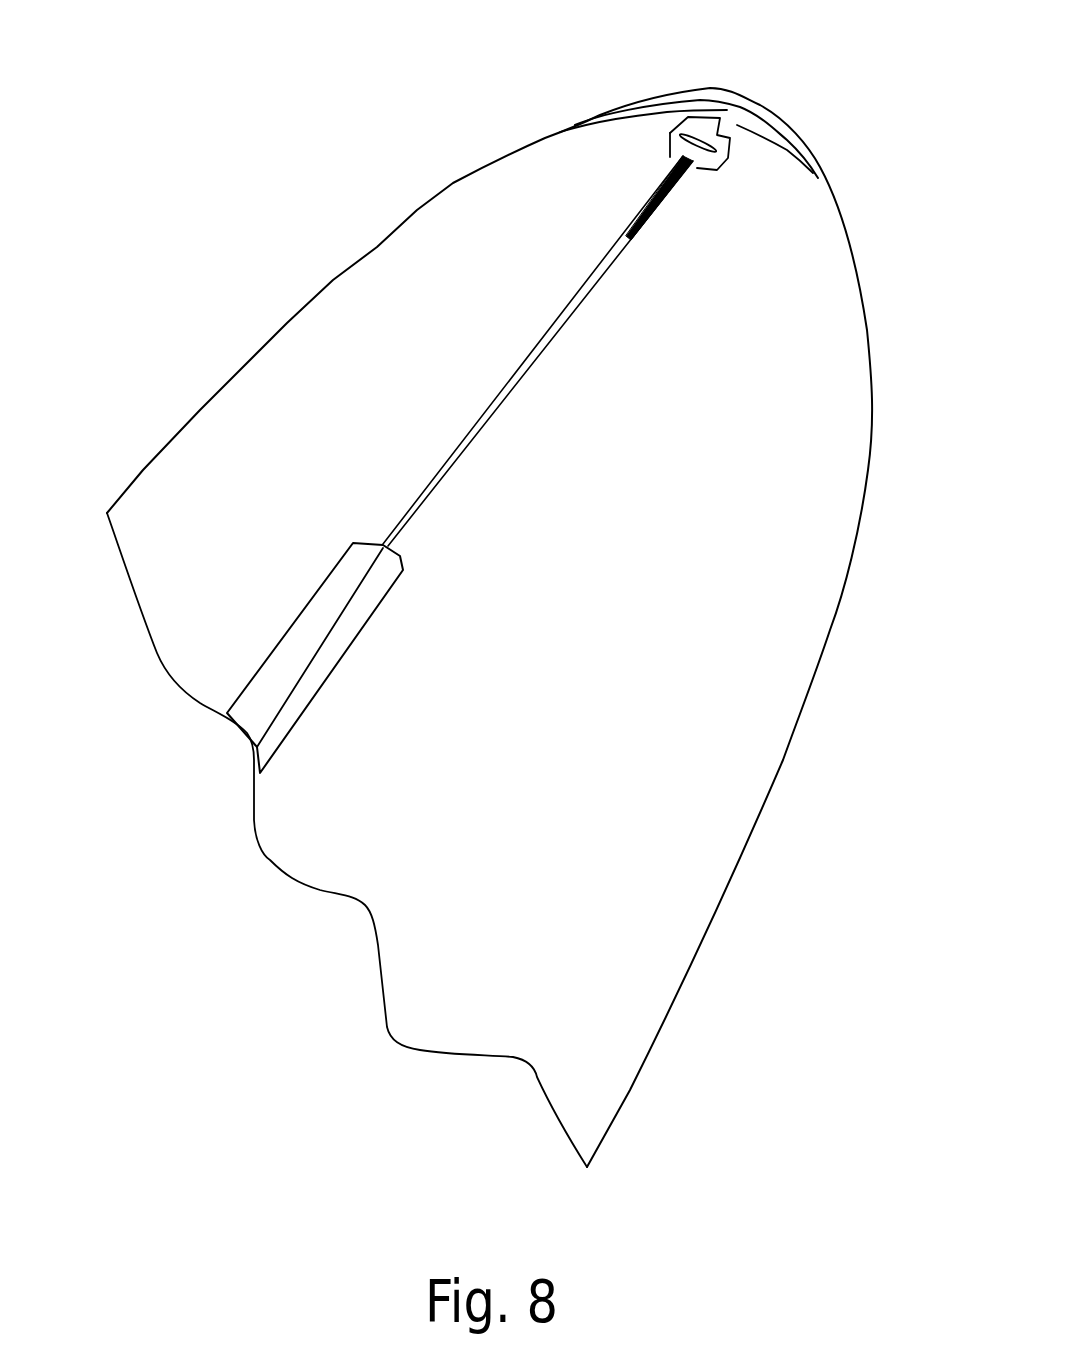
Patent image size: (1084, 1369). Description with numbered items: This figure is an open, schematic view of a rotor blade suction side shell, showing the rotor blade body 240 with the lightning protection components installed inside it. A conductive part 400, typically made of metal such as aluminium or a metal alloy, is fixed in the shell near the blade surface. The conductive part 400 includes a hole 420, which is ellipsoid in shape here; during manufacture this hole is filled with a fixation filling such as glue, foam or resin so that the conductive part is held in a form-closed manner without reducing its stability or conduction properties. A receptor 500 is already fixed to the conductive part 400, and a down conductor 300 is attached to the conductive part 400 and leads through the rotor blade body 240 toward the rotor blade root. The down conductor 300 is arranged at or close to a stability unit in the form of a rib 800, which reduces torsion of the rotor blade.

The rotor blade body 240 is at (651, 668).
The down conductor 300 is at (463, 453).
The conductive part 400 is at (705, 158).
The hole 420 is at (670, 133).
The receptor 500 is at (737, 110).
The rib 800 is at (317, 687).